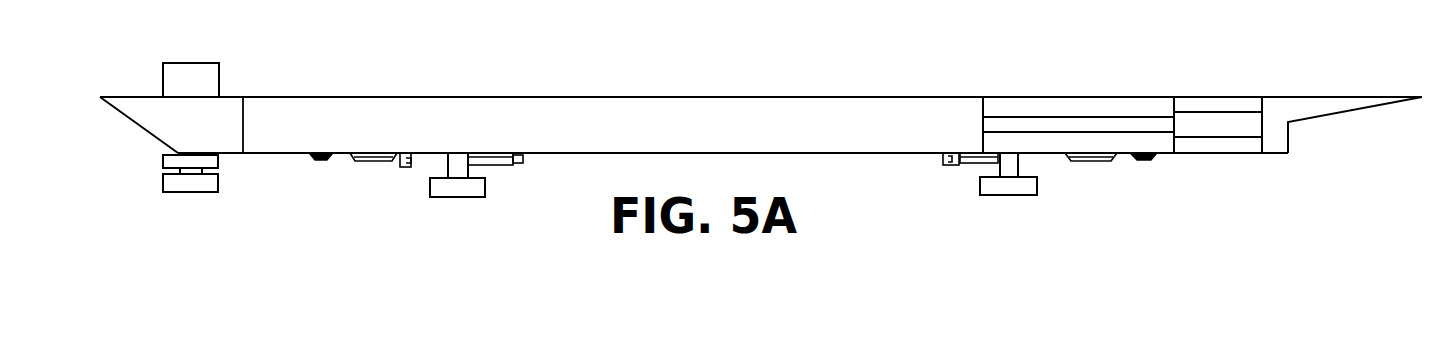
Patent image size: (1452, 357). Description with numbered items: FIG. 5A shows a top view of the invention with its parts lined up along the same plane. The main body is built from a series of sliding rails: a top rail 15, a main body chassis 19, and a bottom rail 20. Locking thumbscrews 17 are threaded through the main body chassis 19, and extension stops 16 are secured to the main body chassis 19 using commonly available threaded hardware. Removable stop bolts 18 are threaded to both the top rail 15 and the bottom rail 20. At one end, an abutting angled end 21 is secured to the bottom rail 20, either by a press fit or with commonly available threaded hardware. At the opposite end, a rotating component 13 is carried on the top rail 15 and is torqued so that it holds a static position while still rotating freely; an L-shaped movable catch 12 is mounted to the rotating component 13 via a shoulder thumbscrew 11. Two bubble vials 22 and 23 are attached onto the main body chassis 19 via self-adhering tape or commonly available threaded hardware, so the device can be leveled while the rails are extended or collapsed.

The shoulder thumbscrew 11 is at (195, 185).
The L-shaped movable catch 12 is at (189, 73).
The rotating component 13 is at (233, 108).
The top rail 15 is at (363, 108).
The extension stops 16 is at (518, 164).
The locking thumbscrews 17 is at (468, 192).
The removable stop bolts 18 is at (407, 167).
The main body chassis 19 is at (1123, 105).
The bottom rail 20 is at (1237, 103).
The abutting angled end 21 is at (1328, 102).
The bubble vial 22 is at (368, 161).
The bubble vial 23 is at (323, 162).